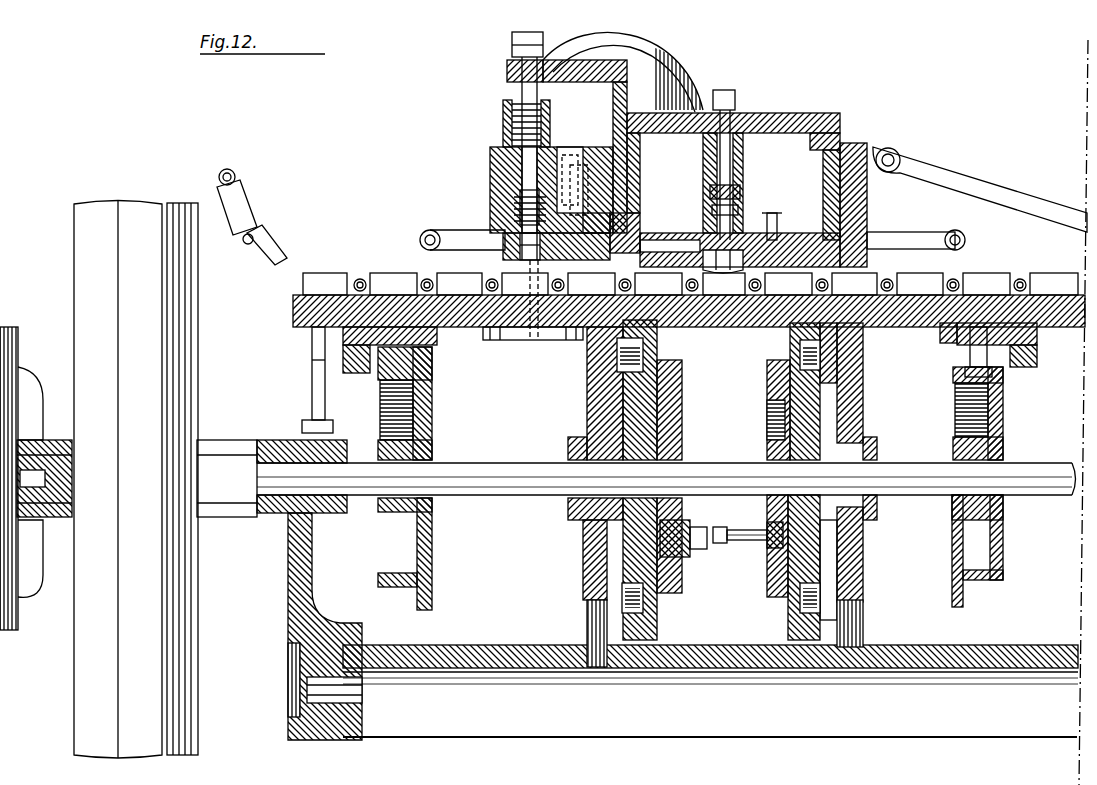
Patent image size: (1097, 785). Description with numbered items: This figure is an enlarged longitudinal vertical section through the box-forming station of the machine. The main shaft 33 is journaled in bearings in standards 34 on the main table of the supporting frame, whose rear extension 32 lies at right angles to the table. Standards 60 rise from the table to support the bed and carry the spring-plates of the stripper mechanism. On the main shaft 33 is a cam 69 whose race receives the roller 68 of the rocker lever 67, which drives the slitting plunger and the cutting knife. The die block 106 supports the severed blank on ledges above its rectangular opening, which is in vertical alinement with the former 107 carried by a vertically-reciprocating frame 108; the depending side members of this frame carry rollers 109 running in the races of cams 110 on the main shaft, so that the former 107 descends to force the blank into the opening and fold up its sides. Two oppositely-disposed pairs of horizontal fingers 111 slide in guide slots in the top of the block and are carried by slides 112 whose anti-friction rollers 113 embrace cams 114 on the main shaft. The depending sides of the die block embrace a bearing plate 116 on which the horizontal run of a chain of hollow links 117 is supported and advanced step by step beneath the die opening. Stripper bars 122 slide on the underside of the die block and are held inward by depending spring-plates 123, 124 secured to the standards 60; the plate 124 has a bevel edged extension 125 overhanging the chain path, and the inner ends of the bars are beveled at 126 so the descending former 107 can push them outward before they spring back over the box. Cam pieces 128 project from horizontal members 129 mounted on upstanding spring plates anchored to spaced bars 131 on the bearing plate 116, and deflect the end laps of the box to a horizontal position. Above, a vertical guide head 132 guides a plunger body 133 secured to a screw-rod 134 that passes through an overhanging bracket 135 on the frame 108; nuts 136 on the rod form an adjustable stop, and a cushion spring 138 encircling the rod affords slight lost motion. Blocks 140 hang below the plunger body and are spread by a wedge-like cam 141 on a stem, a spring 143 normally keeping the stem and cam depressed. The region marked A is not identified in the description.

The rear extension 32 is at (1043, 733).
The main shaft 33 is at (515, 496).
The standards 34 is at (288, 577).
The standards 60 is at (600, 145).
The rocker lever 67 is at (745, 553).
The roller 68 is at (778, 593).
The cam 69 is at (767, 416).
The die block 106 is at (690, 292).
The former 107 is at (743, 188).
The vertically-reciprocating frame 108 is at (797, 114).
The rollers 109 is at (627, 354).
The cams 110 is at (647, 640).
The horizontal fingers 111 is at (440, 232).
The slides 112 is at (338, 337).
The anti-friction rollers 113 is at (347, 360).
The cams 114 is at (433, 607).
The bearing plate 116 is at (293, 313).
The chain of hollow links 117 is at (240, 190).
The stripper bars 122 is at (651, 262).
The spring-plate 123 is at (872, 198).
The spring-plate 124 is at (588, 203).
The angular bevel edged extension 125 is at (555, 300).
The bevel 126 is at (725, 296).
The cam pieces 128 is at (548, 257).
The horizontal members 129 is at (497, 258).
The spaced bars 131 is at (490, 341).
The vertical guide head 132 is at (583, 150).
The plunger body 133 is at (490, 148).
The screw-rod 134 is at (530, 32).
The overhanging bracket 135 is at (643, 45).
The nuts 136 is at (512, 45).
The cushion spring 138 is at (503, 120).
The blocks 140 is at (583, 220).
The wedge-like cam 141 is at (532, 262).
The spring 143 is at (520, 200).
The chamber A is at (690, 240).